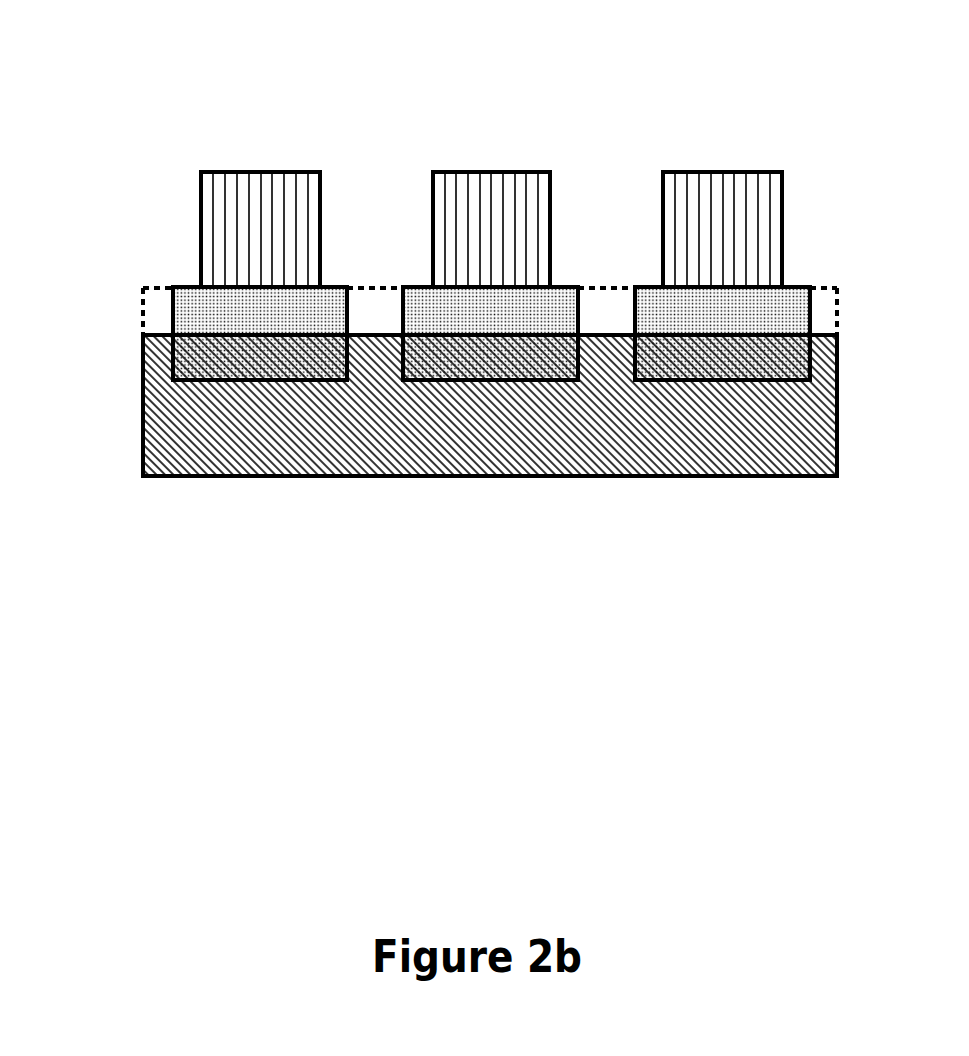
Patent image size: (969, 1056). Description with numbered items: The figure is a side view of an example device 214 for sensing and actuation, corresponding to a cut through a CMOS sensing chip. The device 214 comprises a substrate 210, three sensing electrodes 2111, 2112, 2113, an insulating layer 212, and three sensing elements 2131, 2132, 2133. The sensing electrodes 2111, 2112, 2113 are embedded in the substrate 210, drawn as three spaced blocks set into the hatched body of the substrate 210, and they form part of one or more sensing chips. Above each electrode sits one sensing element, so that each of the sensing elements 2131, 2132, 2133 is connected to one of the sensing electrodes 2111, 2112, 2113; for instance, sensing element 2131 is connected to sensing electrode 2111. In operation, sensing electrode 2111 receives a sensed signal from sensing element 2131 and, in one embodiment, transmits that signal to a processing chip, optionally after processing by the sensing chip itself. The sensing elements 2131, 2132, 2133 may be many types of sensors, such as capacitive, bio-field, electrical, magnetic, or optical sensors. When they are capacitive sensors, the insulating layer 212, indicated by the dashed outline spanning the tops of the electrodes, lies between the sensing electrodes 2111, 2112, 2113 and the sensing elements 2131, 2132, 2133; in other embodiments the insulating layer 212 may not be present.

The device 214 is at (141, 44).
The substrate 210 is at (128, 425).
The insulating layer 212 is at (128, 315).
The sensing electrode 2111 is at (260, 333).
The sensing electrode 2112 is at (490, 333).
The sensing electrode 2113 is at (722, 333).
The sensing element 2131 is at (310, 153).
The sensing element 2132 is at (541, 153).
The sensing element 2133 is at (773, 153).